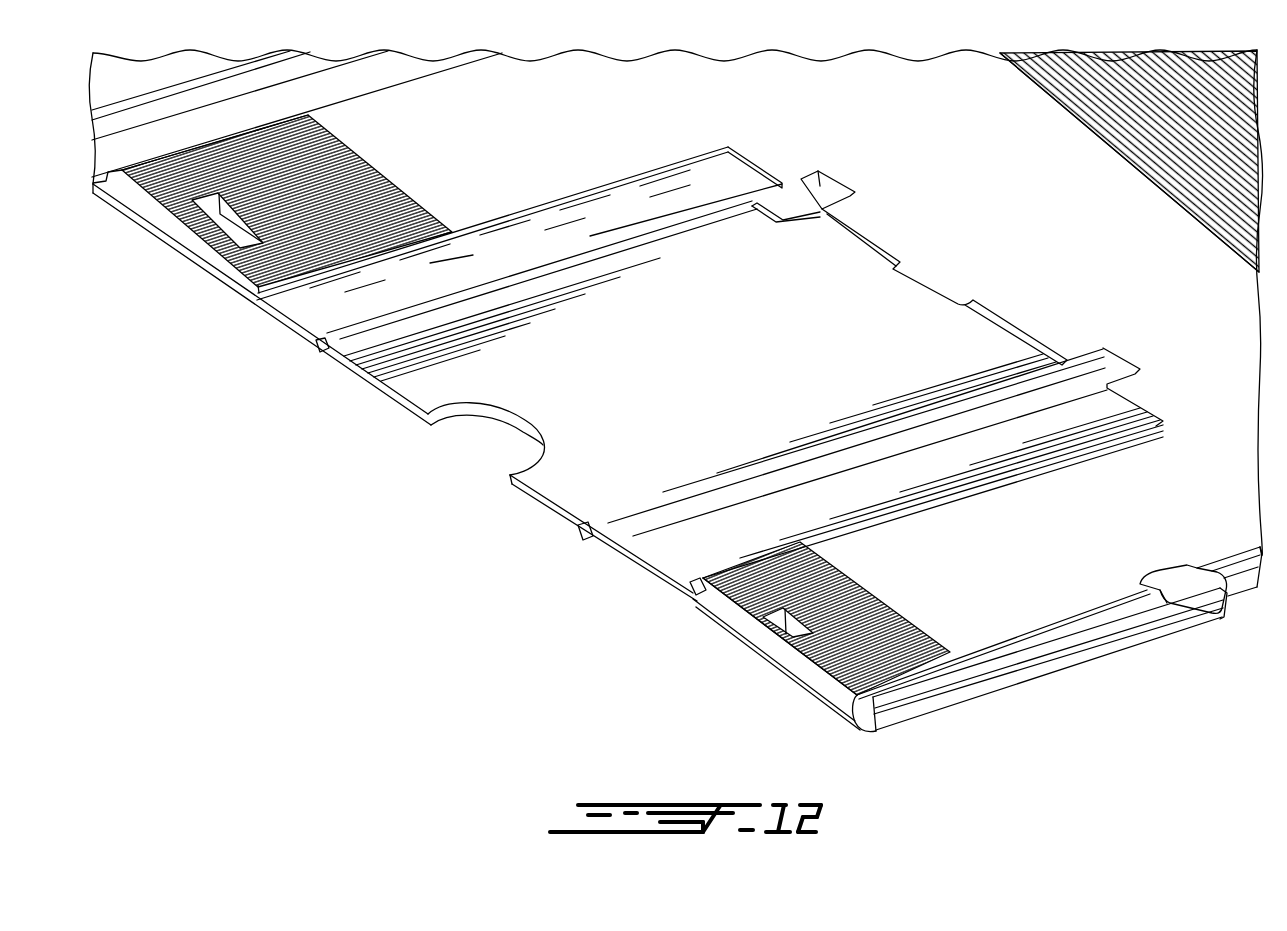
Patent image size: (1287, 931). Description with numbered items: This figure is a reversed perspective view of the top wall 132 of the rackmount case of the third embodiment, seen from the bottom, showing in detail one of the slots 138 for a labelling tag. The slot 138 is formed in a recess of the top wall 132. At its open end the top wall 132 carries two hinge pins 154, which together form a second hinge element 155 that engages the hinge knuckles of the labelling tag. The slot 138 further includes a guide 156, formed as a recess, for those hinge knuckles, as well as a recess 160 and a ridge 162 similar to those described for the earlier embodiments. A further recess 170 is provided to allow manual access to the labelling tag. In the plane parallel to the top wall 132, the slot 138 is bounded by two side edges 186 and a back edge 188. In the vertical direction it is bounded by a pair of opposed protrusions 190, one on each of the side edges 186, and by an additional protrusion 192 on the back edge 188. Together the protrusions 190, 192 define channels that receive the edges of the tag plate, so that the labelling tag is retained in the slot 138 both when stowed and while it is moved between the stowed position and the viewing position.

The top wall 132 is at (1085, 167).
The slot 138 is at (597, 483).
The hinge pins 154 is at (333, 357).
The second hinge element 155 is at (575, 527).
The guide 156 is at (632, 263).
The recess 160 is at (813, 193).
The ridge 162 is at (767, 211).
The recess 170 is at (465, 418).
The side edges 186 is at (252, 270).
The back edge 188 is at (1017, 330).
The protrusions 190 is at (430, 248).
The protrusion 192 is at (922, 282).